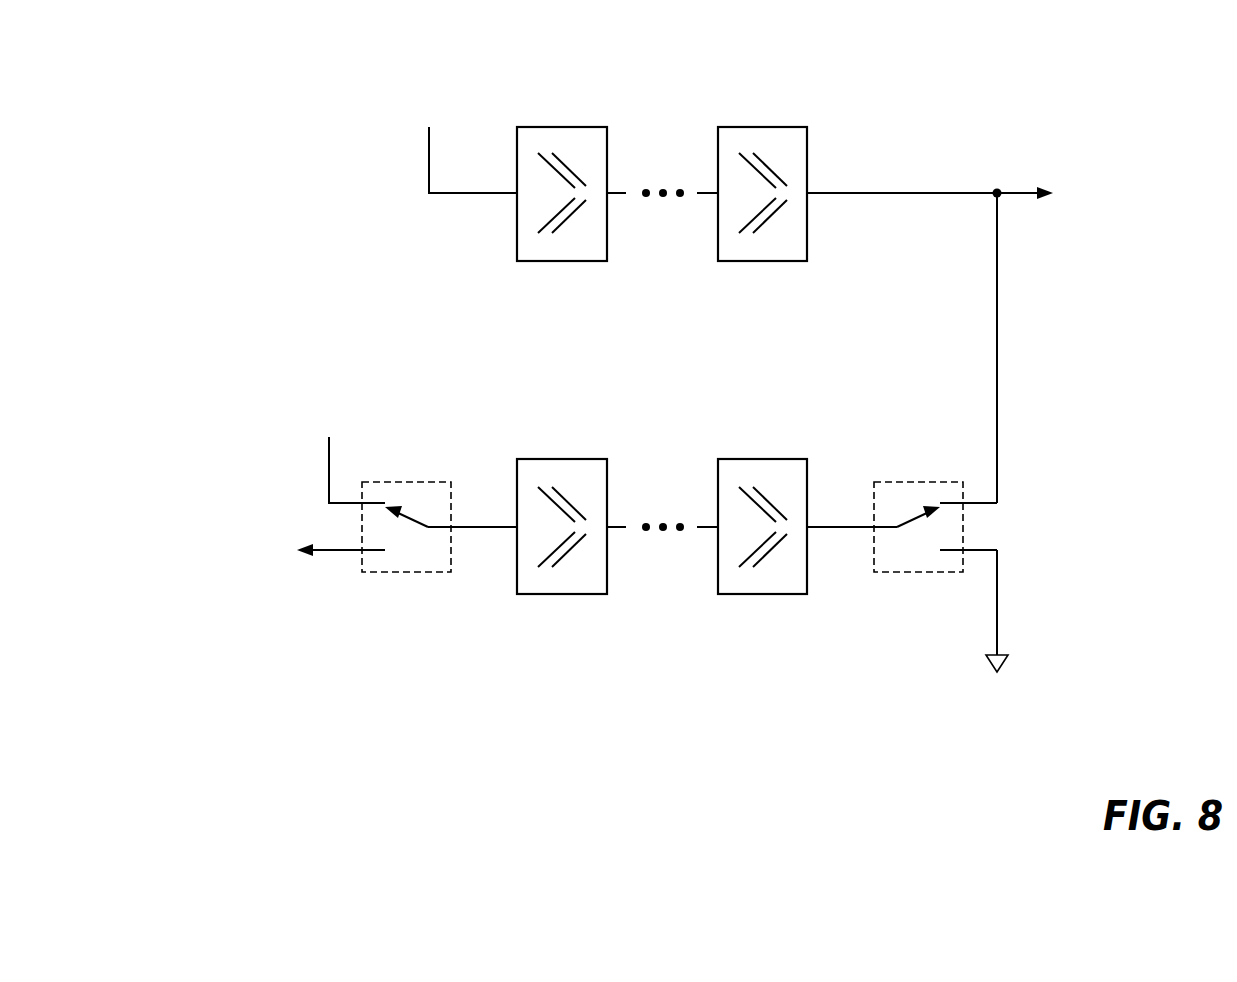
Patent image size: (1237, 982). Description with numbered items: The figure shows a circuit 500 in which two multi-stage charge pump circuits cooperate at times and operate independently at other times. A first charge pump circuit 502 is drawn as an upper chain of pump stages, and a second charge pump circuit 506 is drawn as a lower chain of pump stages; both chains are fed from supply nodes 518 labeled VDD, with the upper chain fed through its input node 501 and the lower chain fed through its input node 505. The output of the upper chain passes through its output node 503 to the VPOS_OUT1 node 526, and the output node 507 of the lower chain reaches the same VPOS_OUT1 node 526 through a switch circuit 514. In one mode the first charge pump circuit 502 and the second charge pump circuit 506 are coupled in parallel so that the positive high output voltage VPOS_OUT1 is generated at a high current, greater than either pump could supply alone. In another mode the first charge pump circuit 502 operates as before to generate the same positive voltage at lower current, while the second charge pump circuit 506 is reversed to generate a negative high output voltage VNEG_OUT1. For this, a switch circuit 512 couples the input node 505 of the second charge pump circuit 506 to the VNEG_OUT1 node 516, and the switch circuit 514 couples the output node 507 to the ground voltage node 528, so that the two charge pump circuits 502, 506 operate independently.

The circuit 500 is at (212, 48).
The input node of positive charge pump chain 501 is at (487, 194).
The first charge pump circuit 502 is at (518, 105).
The output node of positive charge pump chain 503 is at (842, 194).
The input node 505 is at (487, 528).
The second charge pump circuit 506 is at (518, 437).
The output node 507 is at (842, 528).
The switch circuit 512 is at (408, 573).
The switch circuit 514 is at (919, 573).
The VNEG_OUT1 node 516 is at (328, 551).
The supply voltage VDD node 518 is at (429, 148).
The positive output node VPOS_OUT1 526 is at (997, 256).
The ground voltage node 528 is at (997, 611).